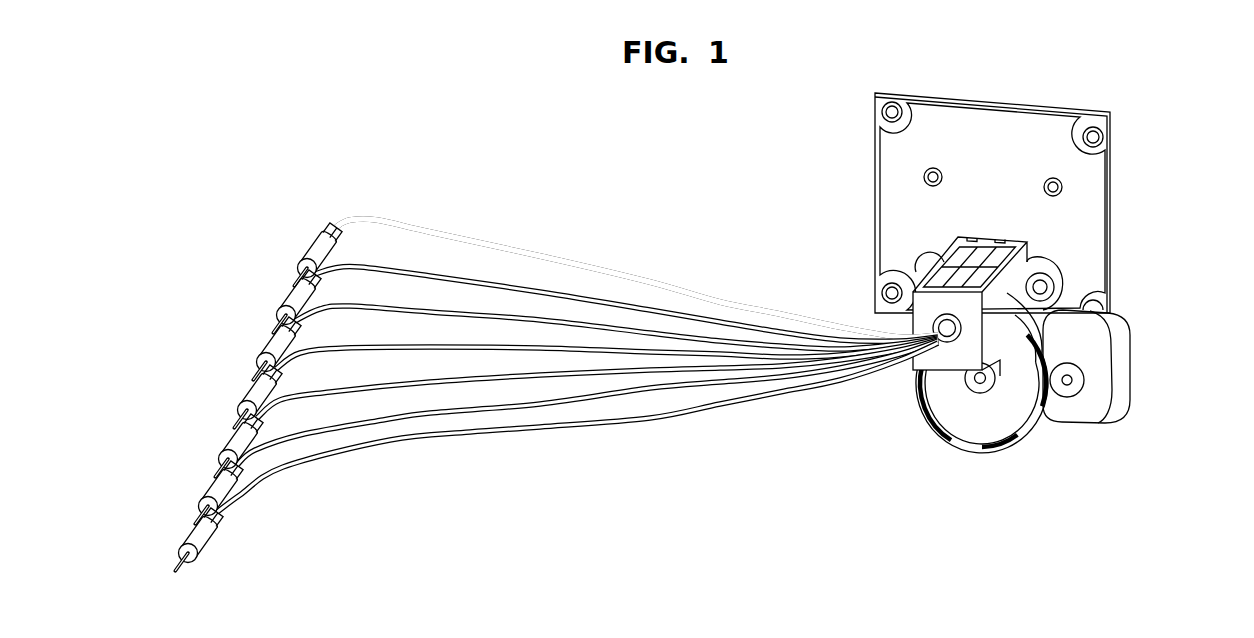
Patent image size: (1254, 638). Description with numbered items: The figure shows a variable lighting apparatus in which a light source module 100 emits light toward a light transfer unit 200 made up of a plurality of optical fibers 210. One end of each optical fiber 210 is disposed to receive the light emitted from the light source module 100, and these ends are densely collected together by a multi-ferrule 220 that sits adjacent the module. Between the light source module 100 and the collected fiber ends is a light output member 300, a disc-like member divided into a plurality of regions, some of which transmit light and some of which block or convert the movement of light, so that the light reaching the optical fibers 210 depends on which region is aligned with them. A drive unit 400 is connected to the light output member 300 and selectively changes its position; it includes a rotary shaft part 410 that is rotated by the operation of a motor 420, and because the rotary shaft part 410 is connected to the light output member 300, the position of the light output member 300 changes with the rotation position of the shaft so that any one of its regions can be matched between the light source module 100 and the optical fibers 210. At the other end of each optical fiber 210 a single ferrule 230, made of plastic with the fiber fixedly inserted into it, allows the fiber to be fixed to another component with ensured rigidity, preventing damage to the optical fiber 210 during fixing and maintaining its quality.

The light source module 100 is at (1122, 243).
The light transfer unit 200 is at (577, 368).
The optical fiber 210 is at (746, 302).
The multi-ferrule 220 is at (948, 347).
The single ferrule 230 is at (176, 553).
The light output member 300 is at (1013, 455).
The drive unit 400 is at (1129, 400).
The rotary shaft part 410 is at (1072, 396).
The motor 420 is at (1100, 348).